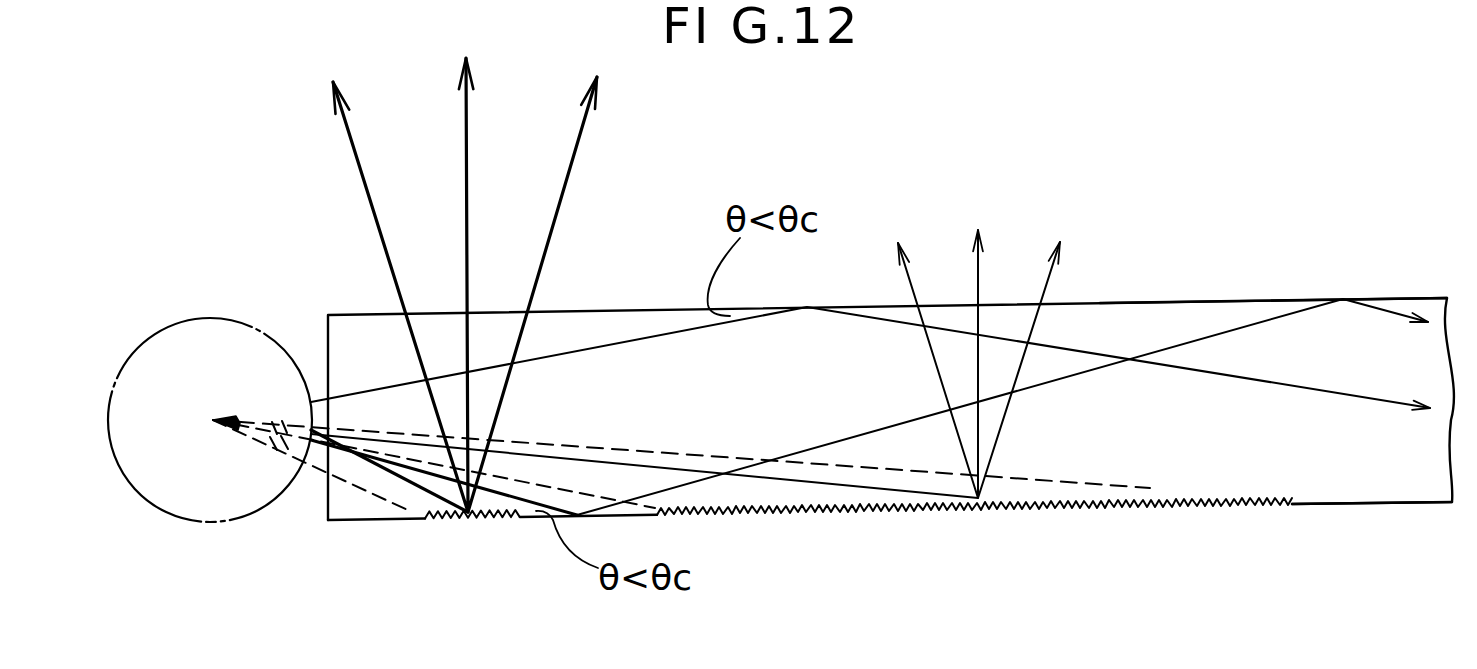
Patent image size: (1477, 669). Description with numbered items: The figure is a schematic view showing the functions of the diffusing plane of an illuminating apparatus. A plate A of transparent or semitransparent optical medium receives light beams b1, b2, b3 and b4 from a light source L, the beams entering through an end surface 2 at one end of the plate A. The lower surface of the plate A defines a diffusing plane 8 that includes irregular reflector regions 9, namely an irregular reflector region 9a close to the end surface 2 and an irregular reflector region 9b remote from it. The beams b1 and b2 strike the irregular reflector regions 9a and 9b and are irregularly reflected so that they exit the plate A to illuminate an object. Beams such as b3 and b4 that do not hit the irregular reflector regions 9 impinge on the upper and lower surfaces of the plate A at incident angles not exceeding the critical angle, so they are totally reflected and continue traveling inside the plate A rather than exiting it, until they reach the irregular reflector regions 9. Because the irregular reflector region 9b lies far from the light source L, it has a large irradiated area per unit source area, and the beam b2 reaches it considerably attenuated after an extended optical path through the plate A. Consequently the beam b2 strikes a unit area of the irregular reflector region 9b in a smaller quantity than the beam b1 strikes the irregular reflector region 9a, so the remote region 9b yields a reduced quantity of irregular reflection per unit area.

The light source L is at (164, 333).
The end surface 2 is at (326, 318).
The plate A is at (1405, 298).
The diffusing plane 8 is at (1327, 507).
The irregular reflector regions 9 is at (856, 565).
The irregular reflector region 9a is at (455, 522).
The irregular reflector region 9b is at (878, 510).
The light beam b1 is at (372, 478).
The light beam b2 is at (602, 448).
The light beam b3 is at (530, 506).
The light beam b4 is at (642, 337).